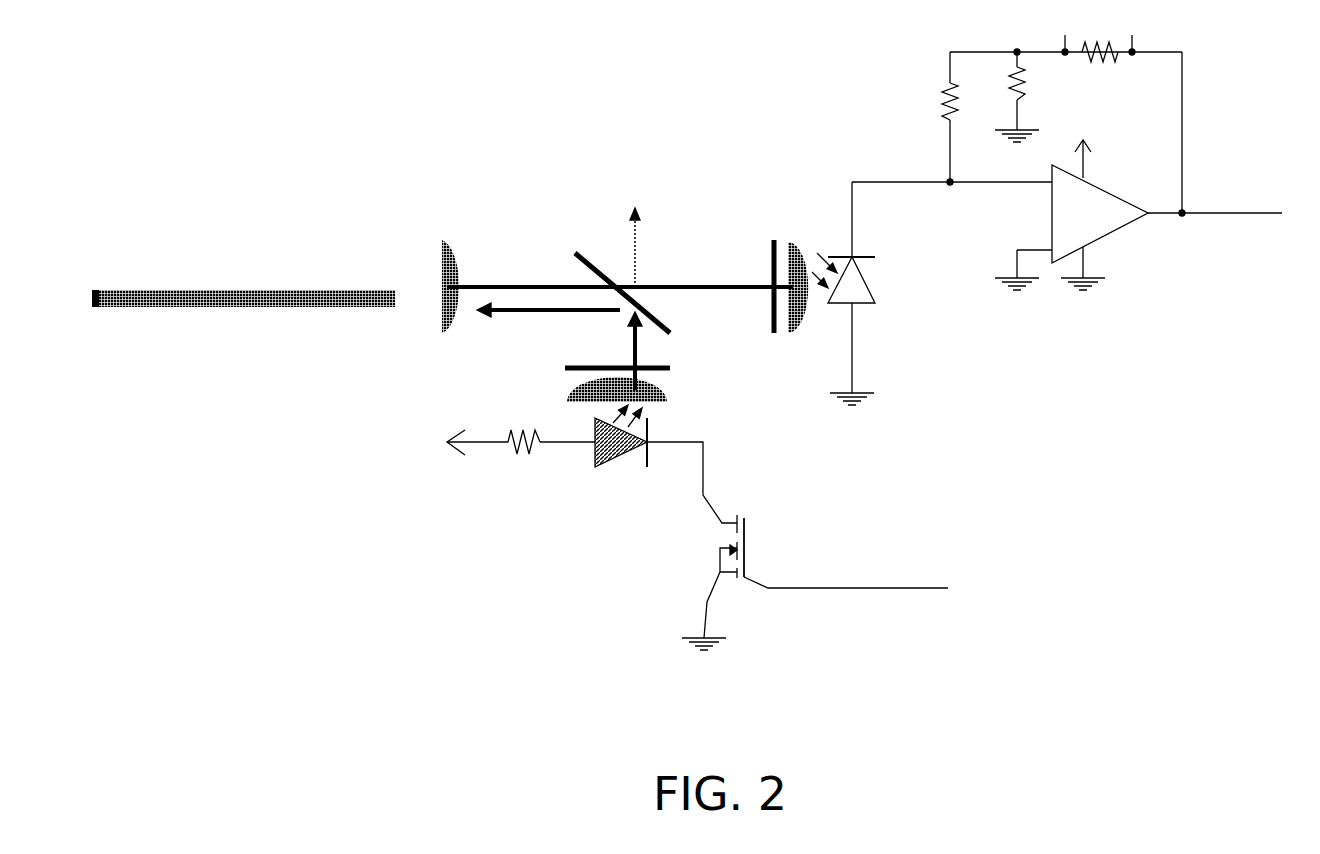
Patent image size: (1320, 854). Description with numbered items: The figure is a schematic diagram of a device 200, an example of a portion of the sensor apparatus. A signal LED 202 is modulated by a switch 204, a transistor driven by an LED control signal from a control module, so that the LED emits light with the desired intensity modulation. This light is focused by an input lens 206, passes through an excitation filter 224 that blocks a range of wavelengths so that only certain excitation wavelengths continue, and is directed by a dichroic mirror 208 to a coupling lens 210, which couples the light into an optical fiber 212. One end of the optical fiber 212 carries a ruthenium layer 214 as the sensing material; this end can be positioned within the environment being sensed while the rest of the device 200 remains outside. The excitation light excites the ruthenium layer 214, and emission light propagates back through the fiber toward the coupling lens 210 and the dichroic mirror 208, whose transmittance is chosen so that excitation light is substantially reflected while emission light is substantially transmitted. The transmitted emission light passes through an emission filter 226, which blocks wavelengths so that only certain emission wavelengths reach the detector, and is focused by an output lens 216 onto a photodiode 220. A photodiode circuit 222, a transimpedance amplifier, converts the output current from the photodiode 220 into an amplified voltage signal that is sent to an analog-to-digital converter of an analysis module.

The device 200 is at (605, 48).
The signal LED 202 is at (617, 478).
The switch 204 is at (815, 582).
The input lens 206 is at (552, 390).
The dichroic mirror 208 is at (553, 247).
The coupling lens 210 is at (452, 346).
The optical fiber 212 is at (245, 315).
The ruthenium layer 214 is at (129, 277).
The output lens 216 is at (810, 302).
The photodiode 220 is at (869, 293).
The photodiode circuit 222 is at (1067, 205).
The excitation filter 224 is at (682, 372).
The emission filter 226 is at (780, 225).